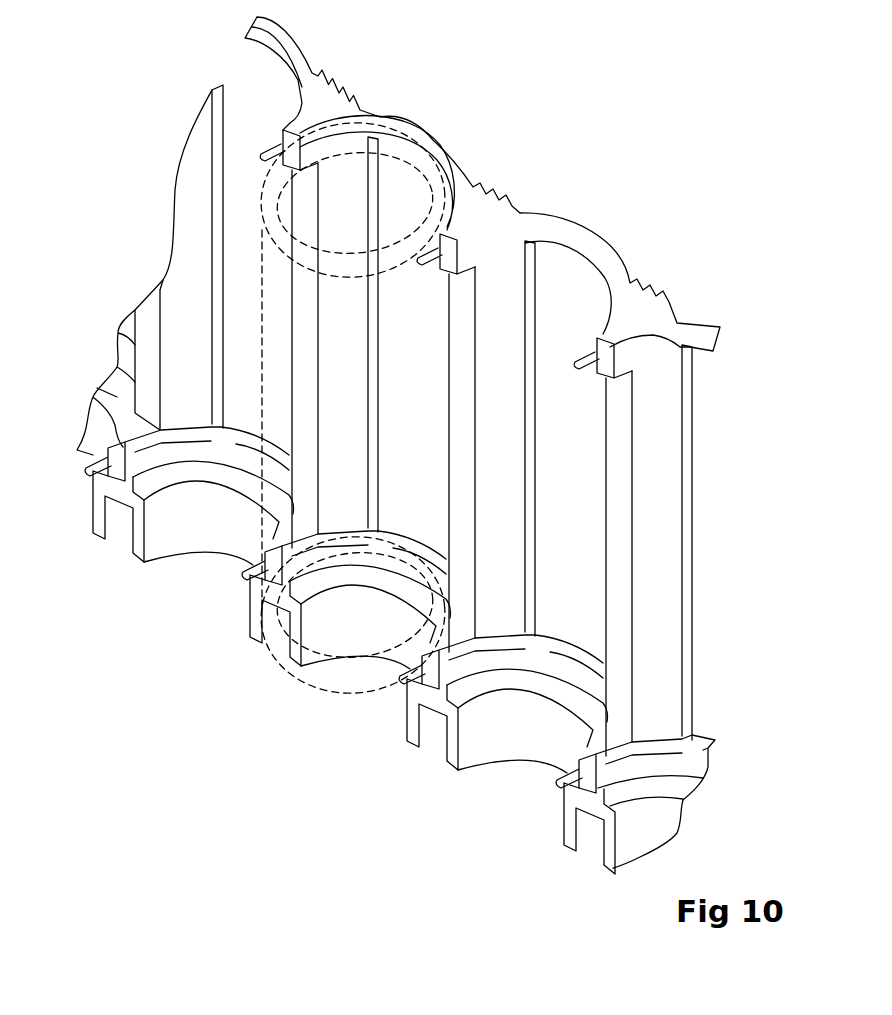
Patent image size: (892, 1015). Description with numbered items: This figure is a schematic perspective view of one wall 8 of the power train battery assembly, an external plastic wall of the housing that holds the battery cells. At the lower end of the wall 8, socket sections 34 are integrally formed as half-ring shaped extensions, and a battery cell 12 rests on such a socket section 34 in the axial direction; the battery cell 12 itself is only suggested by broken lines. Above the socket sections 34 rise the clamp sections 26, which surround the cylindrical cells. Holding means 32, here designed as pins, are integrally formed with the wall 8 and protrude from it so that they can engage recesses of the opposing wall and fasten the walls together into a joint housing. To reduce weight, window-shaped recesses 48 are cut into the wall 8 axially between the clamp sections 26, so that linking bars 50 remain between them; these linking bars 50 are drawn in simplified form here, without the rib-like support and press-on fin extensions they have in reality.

The wall 8 is at (546, 125).
The battery cell 12 is at (418, 136).
The clamp section 26 is at (595, 237).
The holding means 32 is at (250, 563).
The socket section 34 is at (530, 683).
The window-shaped recess 48 is at (552, 262).
The linking bar 50 is at (507, 432).